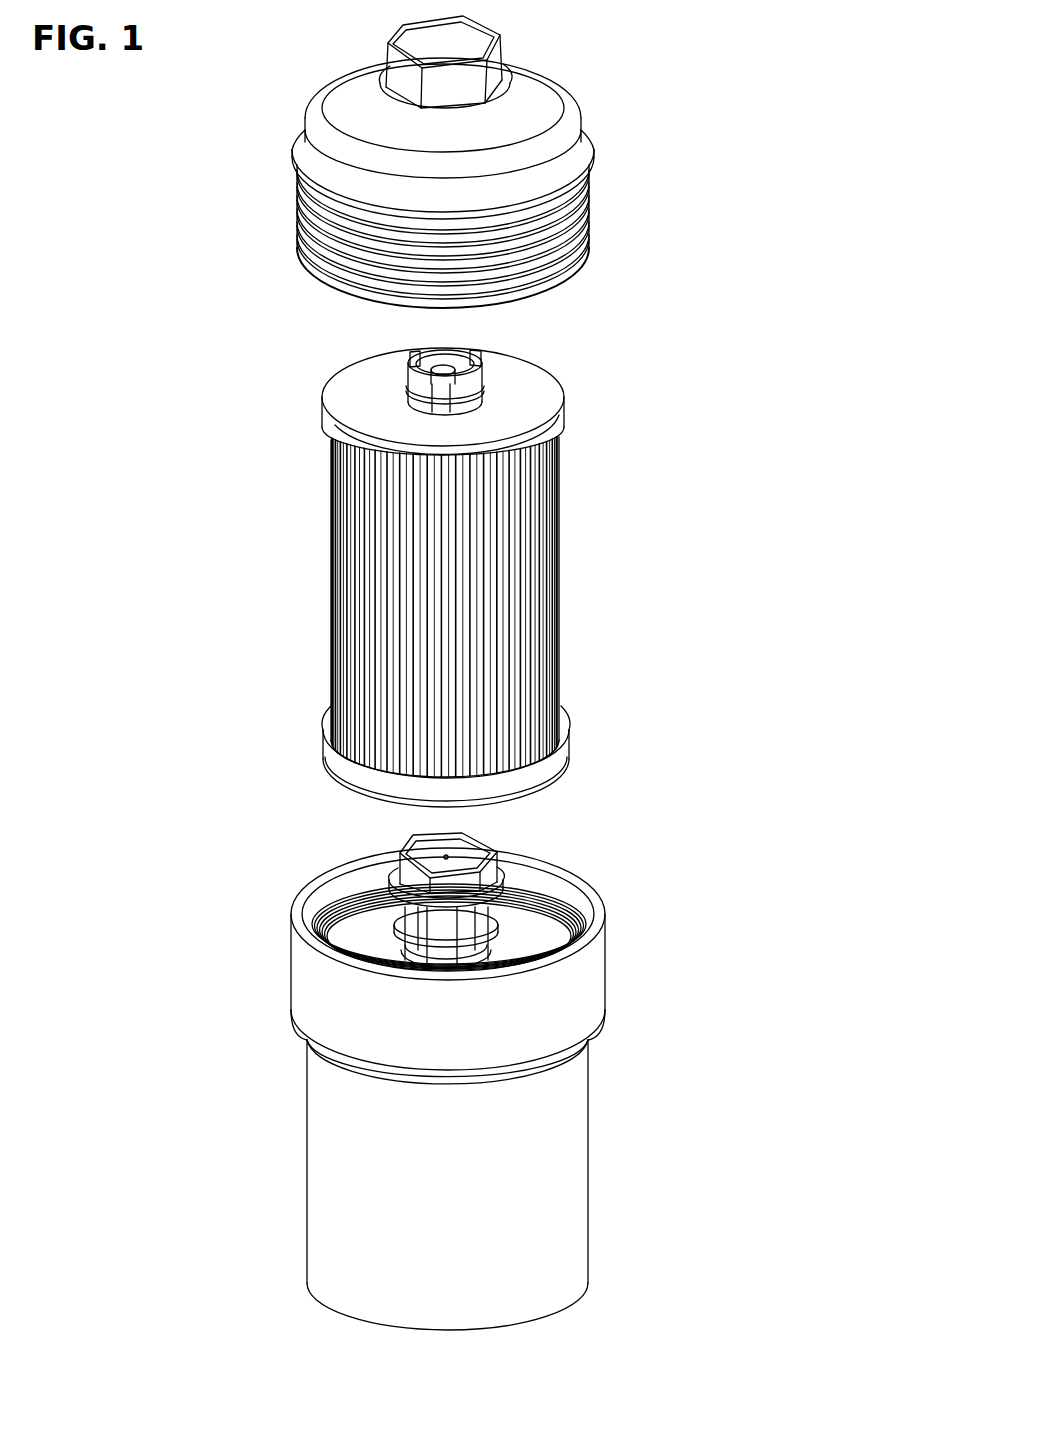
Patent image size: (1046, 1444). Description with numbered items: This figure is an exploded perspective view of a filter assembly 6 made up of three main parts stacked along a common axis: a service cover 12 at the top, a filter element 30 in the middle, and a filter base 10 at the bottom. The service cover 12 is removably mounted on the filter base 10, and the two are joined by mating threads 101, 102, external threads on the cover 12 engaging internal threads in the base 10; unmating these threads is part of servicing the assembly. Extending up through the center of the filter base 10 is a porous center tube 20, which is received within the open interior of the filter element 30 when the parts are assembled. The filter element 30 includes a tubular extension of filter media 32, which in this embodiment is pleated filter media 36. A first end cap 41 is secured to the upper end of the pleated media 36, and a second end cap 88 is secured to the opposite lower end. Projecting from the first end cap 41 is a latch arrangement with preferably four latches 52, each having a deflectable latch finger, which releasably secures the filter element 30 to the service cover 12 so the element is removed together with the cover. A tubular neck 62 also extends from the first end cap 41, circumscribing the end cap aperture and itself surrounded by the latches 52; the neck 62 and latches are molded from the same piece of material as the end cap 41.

The filter assembly 6 is at (660, 80).
The service cover 12 is at (320, 86).
The mating threads 101 is at (586, 246).
The filter element 30 is at (295, 412).
The first end cap 41 is at (541, 388).
The latches 52 is at (468, 398).
The tubular neck 62 is at (440, 402).
The filter media 32 is at (561, 558).
The pleated filter media 36 is at (561, 612).
The second end cap 88 is at (330, 753).
The filter base 10 is at (308, 1173).
The mating threads 102 is at (330, 923).
The center tube 20 is at (494, 922).